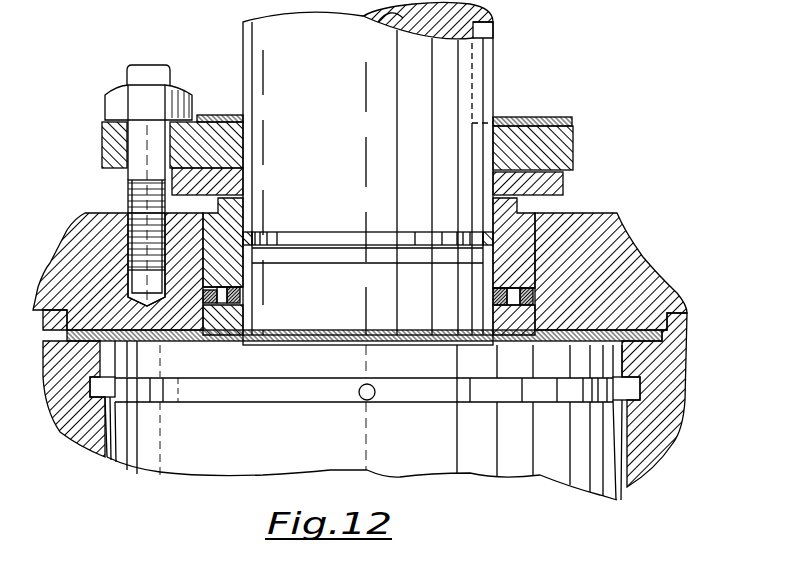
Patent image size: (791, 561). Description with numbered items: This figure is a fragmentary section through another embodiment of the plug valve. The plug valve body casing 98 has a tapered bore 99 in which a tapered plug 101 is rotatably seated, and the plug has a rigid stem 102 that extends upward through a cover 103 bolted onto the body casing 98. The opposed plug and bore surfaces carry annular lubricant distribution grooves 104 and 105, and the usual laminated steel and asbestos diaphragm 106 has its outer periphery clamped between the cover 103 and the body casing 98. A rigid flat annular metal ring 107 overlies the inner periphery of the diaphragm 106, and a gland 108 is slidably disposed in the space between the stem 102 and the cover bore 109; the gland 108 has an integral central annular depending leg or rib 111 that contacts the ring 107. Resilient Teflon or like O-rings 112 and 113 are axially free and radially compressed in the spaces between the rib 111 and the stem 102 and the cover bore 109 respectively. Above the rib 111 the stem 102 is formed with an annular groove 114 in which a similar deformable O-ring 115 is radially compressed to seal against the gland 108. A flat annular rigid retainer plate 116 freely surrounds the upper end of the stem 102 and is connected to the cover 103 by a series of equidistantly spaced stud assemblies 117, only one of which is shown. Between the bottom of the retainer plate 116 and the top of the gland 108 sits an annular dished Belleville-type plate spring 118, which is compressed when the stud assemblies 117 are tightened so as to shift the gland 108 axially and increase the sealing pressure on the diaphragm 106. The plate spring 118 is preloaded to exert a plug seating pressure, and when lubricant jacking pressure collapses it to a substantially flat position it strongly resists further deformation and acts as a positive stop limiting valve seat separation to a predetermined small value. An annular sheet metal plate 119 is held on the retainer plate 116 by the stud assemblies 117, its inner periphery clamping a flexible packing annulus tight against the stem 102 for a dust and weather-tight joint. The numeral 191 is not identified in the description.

The plug valve body casing 98 is at (688, 392).
The tapered bore 99 is at (622, 443).
The tapered plug 101 is at (313, 470).
The stem 102 is at (475, 80).
The cover 103 is at (655, 268).
The lubricant distribution groove 104 is at (205, 402).
The lubricant distribution groove 105 is at (78, 392).
The diaphragm 106 is at (181, 341).
The ring 107 is at (537, 320).
The gland 108 is at (540, 252).
The cover bore 109 is at (537, 236).
The rib 111 is at (540, 273).
The O-ring 112 is at (370, 286).
The O-ring 113 is at (537, 296).
The annular groove 114 is at (292, 233).
The O-ring 115 is at (250, 232).
The retainer plate 116 is at (573, 145).
The stud assemblies 117 is at (150, 90).
The plate spring 118 is at (563, 186).
The sheet metal plate 119 is at (197, 118).
The plate 191 is at (243, 125).